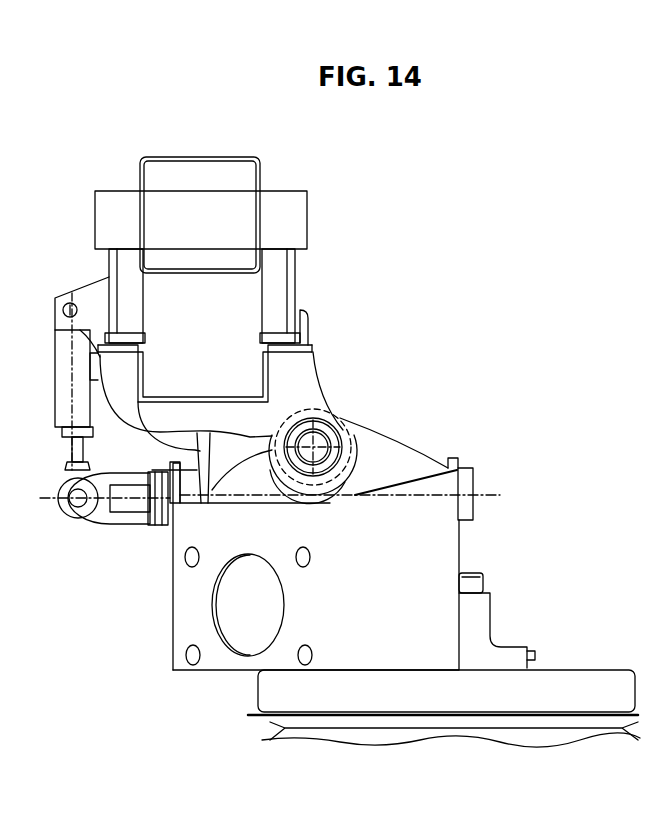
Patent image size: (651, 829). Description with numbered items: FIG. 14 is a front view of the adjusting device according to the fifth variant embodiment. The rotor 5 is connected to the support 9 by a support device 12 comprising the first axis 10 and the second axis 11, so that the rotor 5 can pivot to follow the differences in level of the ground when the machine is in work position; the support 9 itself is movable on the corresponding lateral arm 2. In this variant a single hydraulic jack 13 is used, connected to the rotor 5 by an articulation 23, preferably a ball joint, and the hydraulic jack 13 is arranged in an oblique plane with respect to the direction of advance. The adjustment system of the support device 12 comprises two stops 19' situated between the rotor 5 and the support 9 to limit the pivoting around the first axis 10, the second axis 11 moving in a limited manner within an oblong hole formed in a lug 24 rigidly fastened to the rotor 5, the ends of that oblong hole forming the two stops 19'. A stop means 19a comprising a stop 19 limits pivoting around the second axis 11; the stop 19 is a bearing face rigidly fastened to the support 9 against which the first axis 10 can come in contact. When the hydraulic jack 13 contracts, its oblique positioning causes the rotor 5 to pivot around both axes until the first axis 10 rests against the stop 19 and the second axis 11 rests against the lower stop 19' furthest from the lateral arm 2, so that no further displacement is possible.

The lateral arm 2 is at (183, 172).
The support 9 is at (293, 212).
The hydraulic jack 13 is at (65, 385).
The articulation 23 is at (63, 512).
The support device 12 is at (123, 540).
The stop 19 is at (219, 490).
The stop means 19a is at (218, 470).
The stops 19' is at (332, 450).
The second axis 11 is at (313, 447).
The lug 24 is at (352, 482).
The first axis 10 is at (485, 492).
The rotor 5 is at (542, 715).